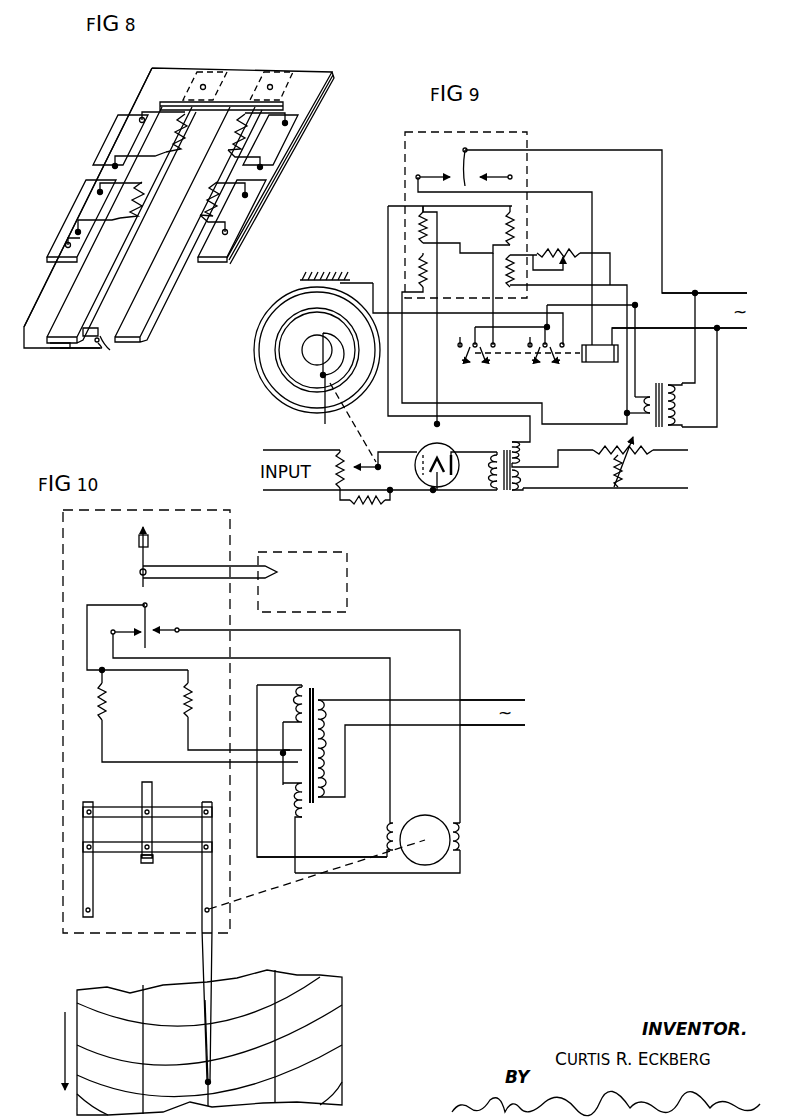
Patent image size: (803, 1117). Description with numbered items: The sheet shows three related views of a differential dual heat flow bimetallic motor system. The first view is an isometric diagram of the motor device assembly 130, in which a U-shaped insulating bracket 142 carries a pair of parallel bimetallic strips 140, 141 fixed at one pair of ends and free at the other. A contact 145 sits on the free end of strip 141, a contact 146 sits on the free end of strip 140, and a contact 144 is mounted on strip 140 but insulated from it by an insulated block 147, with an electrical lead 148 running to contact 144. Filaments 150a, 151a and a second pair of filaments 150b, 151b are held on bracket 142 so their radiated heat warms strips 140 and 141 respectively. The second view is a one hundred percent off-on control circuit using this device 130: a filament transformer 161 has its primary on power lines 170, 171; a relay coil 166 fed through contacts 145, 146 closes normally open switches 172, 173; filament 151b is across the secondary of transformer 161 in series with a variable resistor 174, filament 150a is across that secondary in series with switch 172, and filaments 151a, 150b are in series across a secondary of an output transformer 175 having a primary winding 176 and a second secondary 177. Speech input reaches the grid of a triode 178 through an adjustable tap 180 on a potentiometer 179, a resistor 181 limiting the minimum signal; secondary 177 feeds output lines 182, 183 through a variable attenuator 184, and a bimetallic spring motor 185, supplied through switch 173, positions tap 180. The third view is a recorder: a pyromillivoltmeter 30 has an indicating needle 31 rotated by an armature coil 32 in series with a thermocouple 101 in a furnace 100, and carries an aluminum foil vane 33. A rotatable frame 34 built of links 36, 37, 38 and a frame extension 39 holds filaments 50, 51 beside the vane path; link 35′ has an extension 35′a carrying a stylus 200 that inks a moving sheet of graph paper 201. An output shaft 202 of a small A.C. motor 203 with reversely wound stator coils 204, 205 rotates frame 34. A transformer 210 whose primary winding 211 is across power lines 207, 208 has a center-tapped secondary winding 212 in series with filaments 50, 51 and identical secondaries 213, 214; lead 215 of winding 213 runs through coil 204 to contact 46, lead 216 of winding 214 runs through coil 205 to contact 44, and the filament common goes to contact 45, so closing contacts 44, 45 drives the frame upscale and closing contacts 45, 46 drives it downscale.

In FIG. 8, the bimetallic motor device assembly 130 is at (145, 88).
In FIG. 9, the bimetallic motor device assembly 130 is at (527, 135).
In FIG. 8, the U-shaped bracket 142 is at (310, 110).
In FIG. 8, the bimetallic strip 140 is at (108, 287).
In FIG. 8, the bimetallic strip 141 is at (168, 290).
In FIG. 8, the filament 150a is at (160, 140).
In FIG. 9, the filament 150a is at (418, 222).
In FIG. 8, the filament 150b is at (125, 190).
In FIG. 9, the filament 150b is at (418, 264).
In FIG. 8, the filament 151a is at (240, 130).
In FIG. 9, the filament 151a is at (505, 223).
In FIG. 8, the filament 151b is at (225, 215).
In FIG. 9, the filament 151b is at (505, 271).
In FIG. 8, the electrical lead 148 is at (45, 292).
In FIG. 8, the contact 146 is at (84, 336).
In FIG. 9, the contact 146 is at (441, 174).
In FIG. 8, the insulated block 147 is at (58, 348).
In FIG. 8, the contact 144 is at (98, 346).
In FIG. 9, the contact 144 is at (481, 164).
In FIG. 8, the contact 145 is at (110, 350).
In FIG. 9, the contact 145 is at (463, 158).
In FIG. 9, the power line 170 is at (704, 296).
In FIG. 9, the power line 171 is at (717, 329).
In FIG. 9, the single-pole single-throw switch 172 is at (477, 362).
In FIG. 9, the single-pole single-throw switch 173 is at (546, 362).
In FIG. 9, the relay coil 166 is at (590, 362).
In FIG. 9, the filament transformer 161 is at (668, 427).
In FIG. 9, the variable resistor / secondary winding 174 is at (540, 254).
In FIG. 9, the bimetallic spring motor 185 is at (282, 406).
In FIG. 9, the adjustable tap 180 is at (365, 462).
In FIG. 9, the potentiometer 179 is at (338, 472).
In FIG. 9, the resistor 181 is at (364, 504).
In FIG. 9, the triode 178 is at (418, 485).
In FIG. 9, the primary winding 176 is at (494, 491).
In FIG. 9, the output transformer 175 is at (509, 493).
In FIG. 9, the secondary winding 177 is at (527, 489).
In FIG. 9, the output line 182 is at (663, 451).
In FIG. 9, the variable attenuator 184 is at (614, 490).
In FIG. 9, the output line 183 is at (658, 490).
In FIG. 10, the pyromillivoltmeter 30 is at (230, 546).
In FIG. 10, the indicating needle 31 is at (139, 531).
In FIG. 10, the aluminum foil vane 33 is at (149, 542).
In FIG. 10, the armature coil 32 is at (140, 572).
In FIG. 10, the thermocouple 101 is at (279, 571).
In FIG. 10, the furnace 100 is at (349, 556).
In FIG. 10, the contact 45 is at (145, 619).
In FIG. 10, the contact 46 is at (126, 643).
In FIG. 10, the contact 44 is at (175, 637).
In FIG. 10, the filament 50 is at (107, 692).
In FIG. 10, the filament 51 is at (184, 692).
In FIG. 10, the parallel link 38 is at (97, 807).
In FIG. 10, the parallel link 37 is at (107, 852).
In FIG. 10, the parallel link 36 is at (94, 835).
In FIG. 10, the frame extension 39 is at (154, 835).
In FIG. 10, the rotatable frame 34 is at (164, 852).
In FIG. 10, the link 35′ is at (206, 892).
In FIG. 10, the extension 35′a is at (213, 956).
In FIG. 10, the output shaft 202 is at (276, 888).
In FIG. 10, the secondary winding 213 is at (303, 687).
In FIG. 10, the center-tapped secondary winding 212 is at (294, 787).
In FIG. 10, the transformer 210 is at (316, 692).
In FIG. 10, the primary winding 211 is at (327, 712).
In FIG. 10, the A.C. power line 207 is at (478, 704).
In FIG. 10, the A.C. power line 208 is at (479, 727).
In FIG. 10, the secondary winding 214 is at (305, 817).
In FIG. 10, the lead 215 is at (333, 857).
In FIG. 10, the lead 216 is at (366, 874).
In FIG. 10, the A.C. motor 203 is at (411, 823).
In FIG. 10, the stator coil 204 is at (386, 841).
In FIG. 10, the stator coil 205 is at (463, 841).
In FIG. 10, the graph paper 201 is at (343, 1032).
In FIG. 10, the stylus 200 is at (211, 1078).